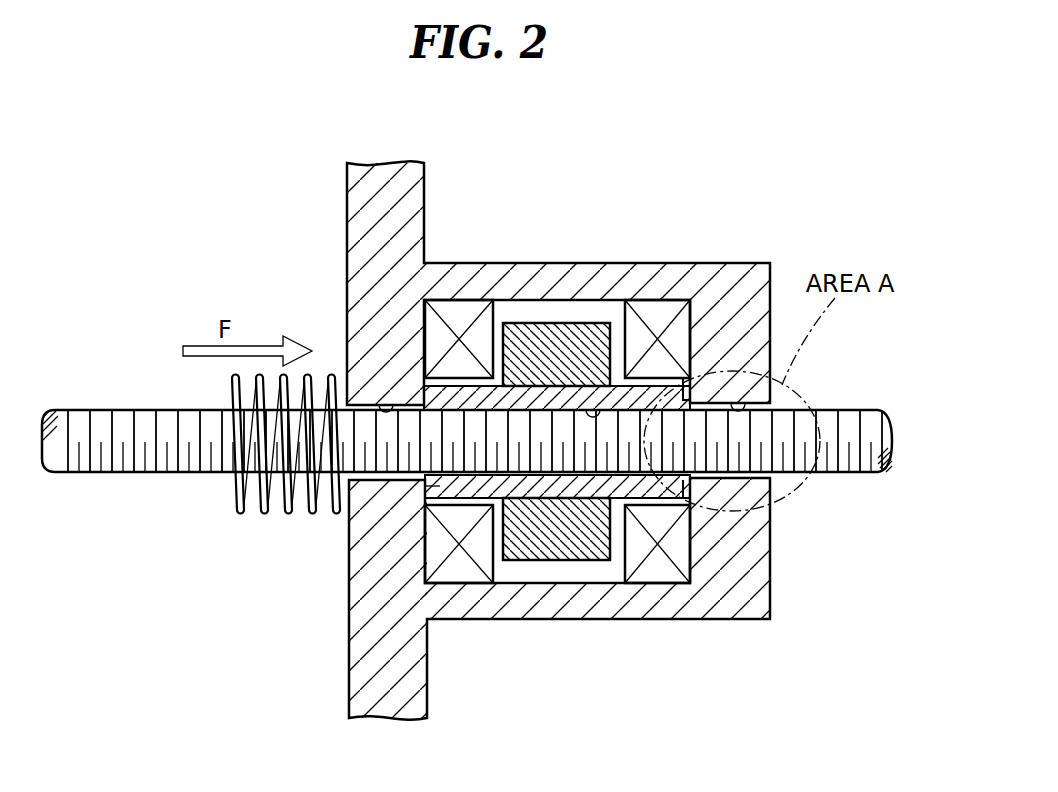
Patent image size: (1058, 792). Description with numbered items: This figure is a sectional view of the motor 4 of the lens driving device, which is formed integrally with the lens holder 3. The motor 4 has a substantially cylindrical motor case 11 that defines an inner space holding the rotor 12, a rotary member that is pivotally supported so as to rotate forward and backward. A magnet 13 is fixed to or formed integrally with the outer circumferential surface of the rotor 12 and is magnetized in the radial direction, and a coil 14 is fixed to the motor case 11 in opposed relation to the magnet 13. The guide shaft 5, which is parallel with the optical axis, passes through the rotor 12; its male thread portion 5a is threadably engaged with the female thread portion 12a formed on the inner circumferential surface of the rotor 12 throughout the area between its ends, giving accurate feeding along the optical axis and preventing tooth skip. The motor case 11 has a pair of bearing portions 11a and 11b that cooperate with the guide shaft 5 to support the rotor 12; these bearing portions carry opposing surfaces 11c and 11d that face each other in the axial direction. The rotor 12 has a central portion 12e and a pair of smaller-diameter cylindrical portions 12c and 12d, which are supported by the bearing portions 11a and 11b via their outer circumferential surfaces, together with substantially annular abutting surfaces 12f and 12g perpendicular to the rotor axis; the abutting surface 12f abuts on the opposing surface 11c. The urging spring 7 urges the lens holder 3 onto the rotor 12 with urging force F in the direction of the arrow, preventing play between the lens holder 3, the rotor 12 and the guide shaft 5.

The lens holder 3 is at (347, 202).
The motor 4 is at (774, 260).
The guide shaft 5 is at (862, 472).
The male thread portion 5a is at (848, 410).
The urging spring 7 is at (236, 498).
The motor case 11 is at (621, 258).
The bearing portion 11a is at (380, 408).
The bearing portion 11b is at (743, 400).
The opposing surface 11c is at (450, 373).
The opposing surface 11d is at (733, 410).
The rotor 12 is at (534, 560).
The female thread portion 12a is at (588, 404).
The cylindrical portion 12c is at (392, 485).
The cylindrical portion 12d is at (702, 470).
The central portion 12e is at (585, 545).
The abutting surface 12f is at (420, 494).
The abutting surface 12g is at (693, 478).
The magnet 13 is at (600, 545).
The coil 14 is at (458, 572).